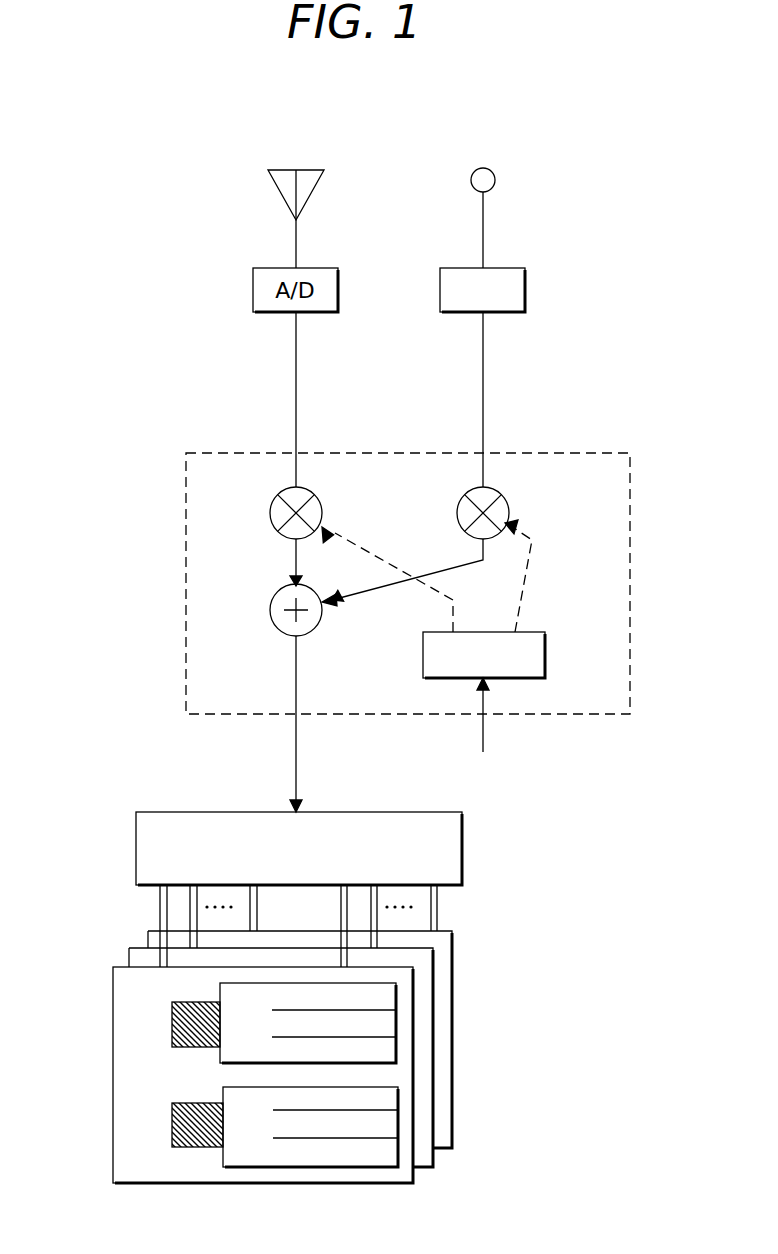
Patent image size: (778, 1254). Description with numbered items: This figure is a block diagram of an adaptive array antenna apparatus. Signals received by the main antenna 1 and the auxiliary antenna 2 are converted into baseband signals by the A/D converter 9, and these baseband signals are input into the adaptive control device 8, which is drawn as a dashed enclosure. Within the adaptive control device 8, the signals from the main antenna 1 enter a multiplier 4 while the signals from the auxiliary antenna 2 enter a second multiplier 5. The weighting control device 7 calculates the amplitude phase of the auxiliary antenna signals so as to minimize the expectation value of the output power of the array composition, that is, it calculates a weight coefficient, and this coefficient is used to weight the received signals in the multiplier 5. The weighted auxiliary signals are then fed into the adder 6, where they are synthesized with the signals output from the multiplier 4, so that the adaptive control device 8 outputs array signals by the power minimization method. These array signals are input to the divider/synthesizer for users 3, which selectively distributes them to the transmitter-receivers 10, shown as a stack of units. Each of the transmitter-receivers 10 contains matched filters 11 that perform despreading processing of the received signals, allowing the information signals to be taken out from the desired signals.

The main antenna 1 is at (306, 170).
The auxiliary antenna 2 is at (490, 168).
The divider/synthesizer for users 3 is at (136, 848).
The multiplier 4 is at (270, 513).
The multiplier 5 is at (510, 513).
The adder 6 is at (270, 611).
The weighting control device 7 is at (546, 655).
The adaptive control device 8 is at (186, 588).
The A/D converter 9 is at (526, 290).
The transmitter-receivers 10 is at (433, 1182).
The matched filters 11 is at (168, 1023).